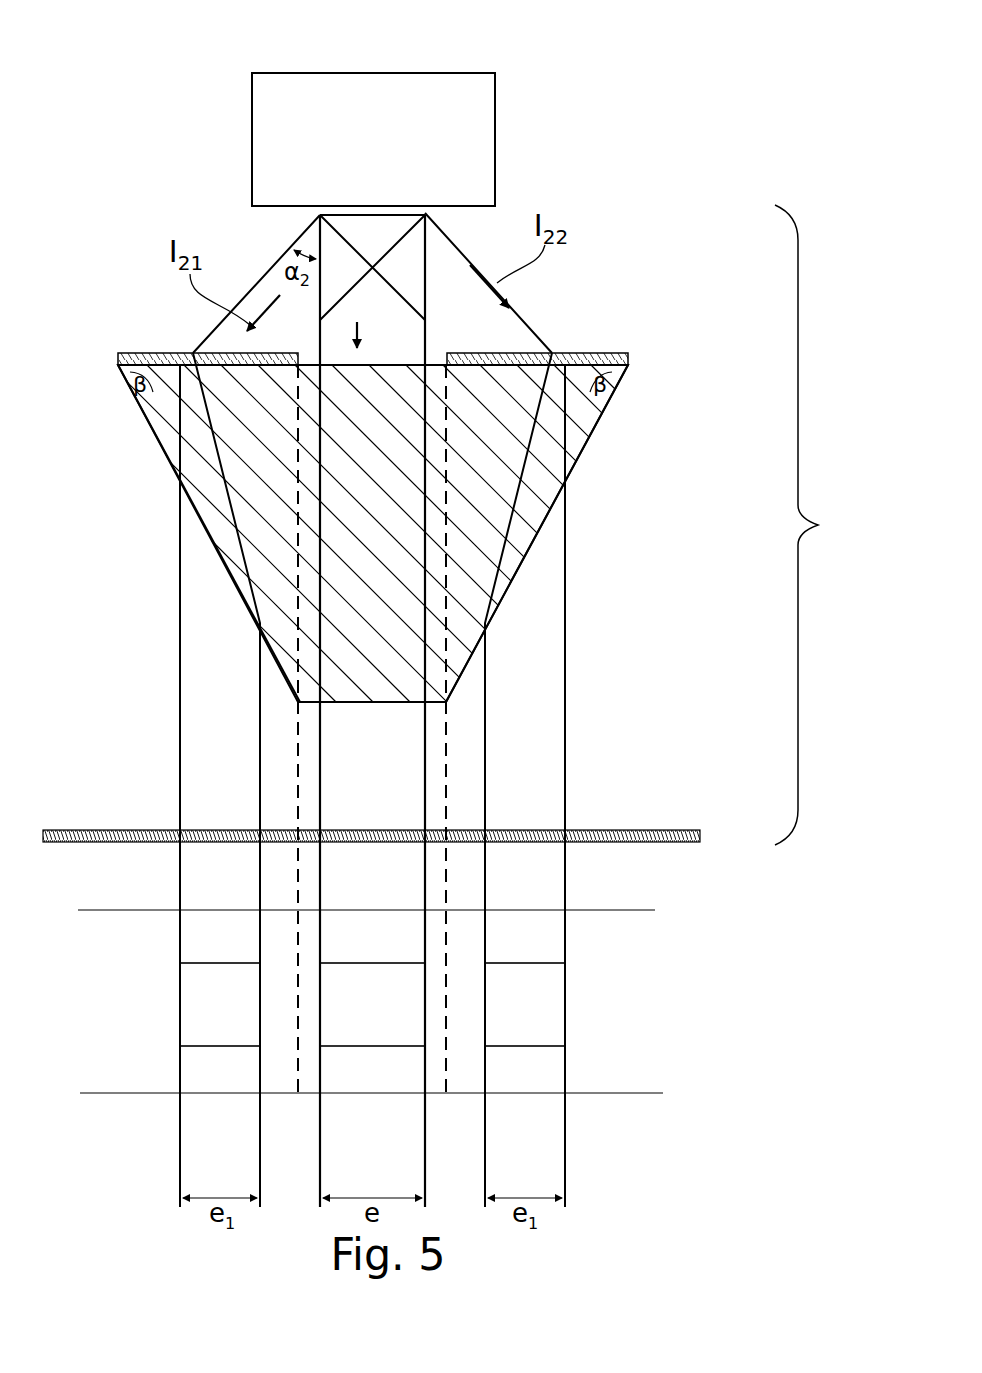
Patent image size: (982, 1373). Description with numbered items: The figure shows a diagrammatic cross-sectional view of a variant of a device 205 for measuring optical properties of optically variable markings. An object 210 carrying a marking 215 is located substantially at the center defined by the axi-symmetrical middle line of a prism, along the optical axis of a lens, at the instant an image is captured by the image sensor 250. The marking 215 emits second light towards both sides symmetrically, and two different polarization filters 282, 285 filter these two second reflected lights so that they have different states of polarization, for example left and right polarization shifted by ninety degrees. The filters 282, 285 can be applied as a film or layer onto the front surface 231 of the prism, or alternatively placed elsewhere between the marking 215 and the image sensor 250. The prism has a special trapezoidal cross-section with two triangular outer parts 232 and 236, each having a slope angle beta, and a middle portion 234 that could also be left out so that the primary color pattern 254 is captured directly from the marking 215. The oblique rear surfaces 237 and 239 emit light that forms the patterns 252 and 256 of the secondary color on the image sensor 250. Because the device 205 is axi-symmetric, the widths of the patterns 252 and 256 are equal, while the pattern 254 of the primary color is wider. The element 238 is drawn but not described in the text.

The device 205 is at (824, 525).
The object 210 is at (477, 120).
The marking 215 is at (360, 207).
The front surface 231 is at (386, 368).
The triangular outer part 232 is at (197, 438).
The middle portion 234 is at (393, 523).
The triangular outer part 236 is at (596, 430).
The oblique rear surface 237 is at (222, 558).
The bottom face of prism 238 is at (375, 704).
The oblique rear surface 239 is at (486, 651).
The image sensor 250 is at (690, 831).
The pattern 252 is at (205, 831).
The pattern 254 is at (390, 843).
The pattern 256 is at (520, 831).
The polarization filter 282 is at (150, 354).
The polarization filter 285 is at (578, 354).